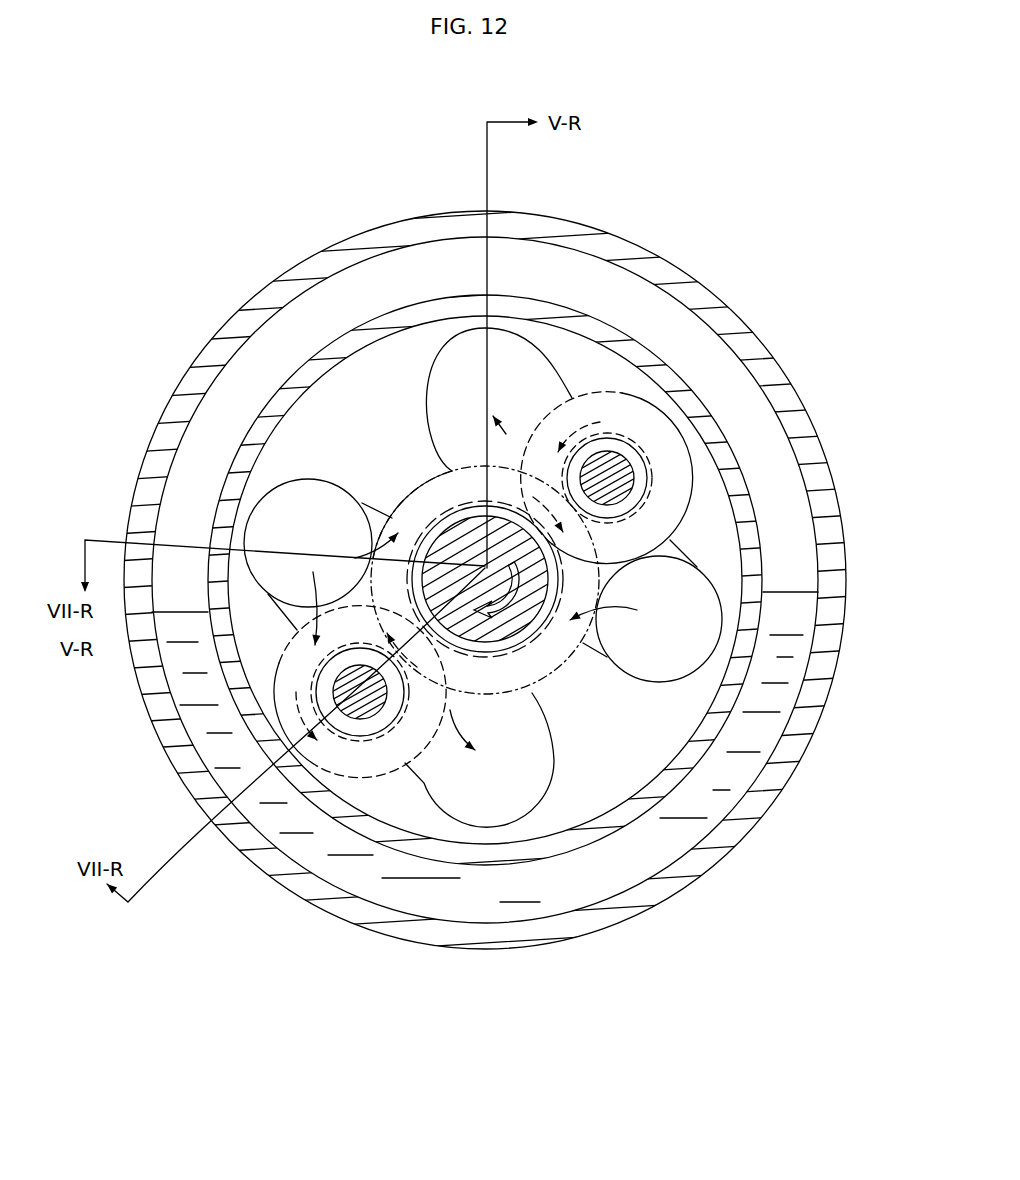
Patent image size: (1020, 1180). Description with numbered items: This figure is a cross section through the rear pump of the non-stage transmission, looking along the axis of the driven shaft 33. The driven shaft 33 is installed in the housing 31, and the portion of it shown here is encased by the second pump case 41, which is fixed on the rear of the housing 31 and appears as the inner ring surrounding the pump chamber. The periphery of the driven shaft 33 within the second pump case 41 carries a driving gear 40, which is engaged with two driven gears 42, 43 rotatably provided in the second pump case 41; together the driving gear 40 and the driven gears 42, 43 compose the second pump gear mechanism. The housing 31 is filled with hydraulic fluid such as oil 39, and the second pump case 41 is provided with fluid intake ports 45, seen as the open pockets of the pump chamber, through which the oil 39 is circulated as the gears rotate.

The housing 31 is at (683, 877).
The driven shaft 33 is at (525, 633).
The oil 39 is at (203, 714).
The driving gear 40 is at (390, 518).
The second pump case 41 is at (462, 856).
The driven gear 42 is at (663, 442).
The driven gear 43 is at (347, 755).
The fluid intake ports 45 is at (458, 372).